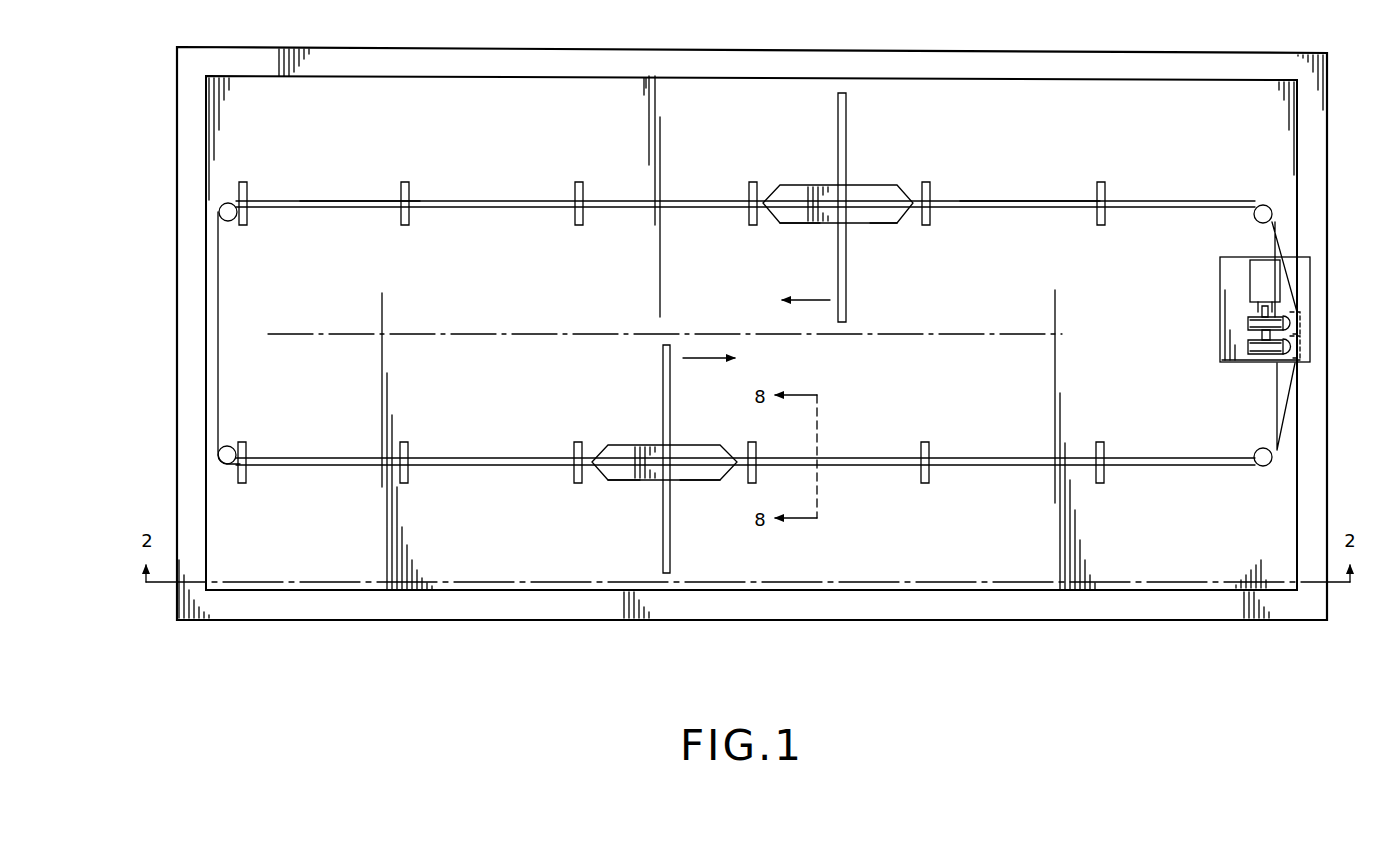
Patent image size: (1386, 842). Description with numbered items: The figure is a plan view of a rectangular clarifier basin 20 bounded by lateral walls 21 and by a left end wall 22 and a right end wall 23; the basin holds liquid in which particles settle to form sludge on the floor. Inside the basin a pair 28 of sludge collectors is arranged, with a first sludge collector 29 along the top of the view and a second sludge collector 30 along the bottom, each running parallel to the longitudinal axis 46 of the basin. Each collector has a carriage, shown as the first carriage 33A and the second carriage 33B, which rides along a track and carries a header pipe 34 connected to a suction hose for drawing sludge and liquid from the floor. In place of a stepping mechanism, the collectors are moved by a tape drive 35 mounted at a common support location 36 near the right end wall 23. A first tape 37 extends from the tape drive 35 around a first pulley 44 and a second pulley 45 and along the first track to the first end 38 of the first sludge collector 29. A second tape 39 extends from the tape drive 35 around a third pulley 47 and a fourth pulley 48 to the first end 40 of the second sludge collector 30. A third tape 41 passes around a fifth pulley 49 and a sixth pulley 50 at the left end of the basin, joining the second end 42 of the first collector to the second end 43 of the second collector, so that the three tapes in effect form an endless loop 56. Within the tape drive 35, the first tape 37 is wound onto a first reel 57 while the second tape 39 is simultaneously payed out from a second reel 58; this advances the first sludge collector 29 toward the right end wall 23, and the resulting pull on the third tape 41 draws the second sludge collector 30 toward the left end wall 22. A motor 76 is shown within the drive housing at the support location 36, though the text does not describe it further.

The clarifier basin 20 is at (1250, 51).
The lateral walls 21 is at (548, 78).
The left end wall 22 is at (210, 116).
The right end wall 23 is at (1295, 129).
The pair of sludge collectors 28 is at (714, 264).
The first sludge collector 29 is at (886, 184).
The second sludge collector 30 is at (692, 442).
The first carriage 33A is at (822, 188).
The second carriage 33B is at (645, 446).
The header pipe 34 is at (848, 303).
The tape drive 35 is at (1216, 297).
The common support location 36 is at (1318, 276).
The first tape 37 is at (1020, 202).
The first end of the first sludge collector 38 is at (898, 224).
The second tape 39 is at (985, 455).
The first end of the second sludge collector 40 is at (703, 481).
The third tape 41 is at (475, 198).
The second end of the first sludge collector 42 is at (795, 224).
The second end of the second sludge collector 43 is at (625, 481).
The first pulley 44 is at (1302, 318).
The second pulley 45 is at (1270, 212).
The longitudinal axis 46 is at (465, 332).
The third pulley 47 is at (1305, 351).
The fourth pulley 48 is at (1275, 458).
The fifth pulley 49 is at (224, 201).
The sixth pulley 50 is at (232, 450).
The endless loop 56 is at (338, 194).
The first reel 57 is at (1246, 326).
The second reel 58 is at (1230, 357).
The motor 76 is at (1213, 262).